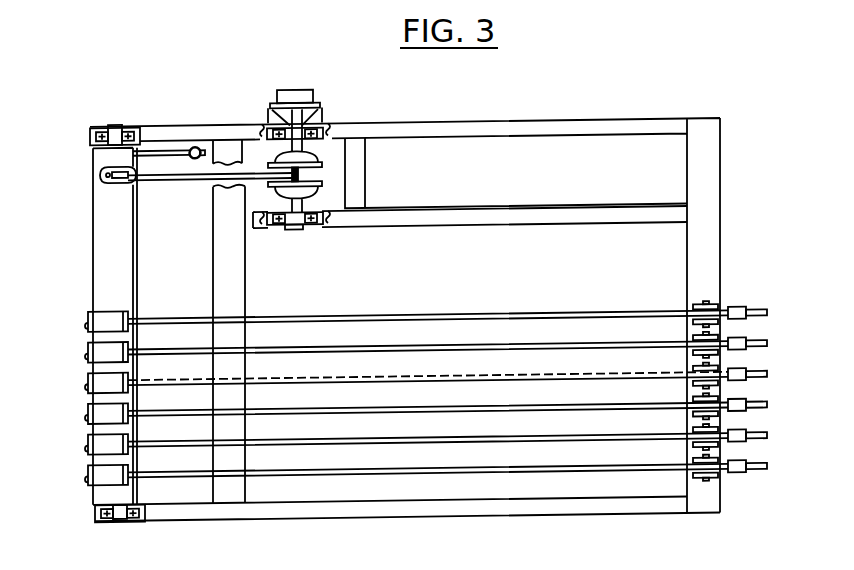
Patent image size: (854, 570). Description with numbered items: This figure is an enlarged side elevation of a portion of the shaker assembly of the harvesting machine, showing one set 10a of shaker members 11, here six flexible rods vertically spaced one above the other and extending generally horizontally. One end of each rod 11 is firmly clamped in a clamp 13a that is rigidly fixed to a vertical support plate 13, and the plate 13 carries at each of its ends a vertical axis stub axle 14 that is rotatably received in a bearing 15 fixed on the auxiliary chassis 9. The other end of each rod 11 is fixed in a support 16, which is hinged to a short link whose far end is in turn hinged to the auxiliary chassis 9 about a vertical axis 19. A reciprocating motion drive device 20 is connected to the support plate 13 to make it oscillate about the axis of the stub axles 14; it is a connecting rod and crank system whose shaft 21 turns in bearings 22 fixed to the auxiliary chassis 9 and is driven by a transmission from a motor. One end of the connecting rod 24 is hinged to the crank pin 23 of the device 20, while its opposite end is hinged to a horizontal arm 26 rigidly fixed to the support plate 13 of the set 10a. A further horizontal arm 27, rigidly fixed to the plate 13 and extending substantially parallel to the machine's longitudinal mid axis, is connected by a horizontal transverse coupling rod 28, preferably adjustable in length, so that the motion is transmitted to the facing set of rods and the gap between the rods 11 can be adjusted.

The auxiliary chassis 9 is at (538, 121).
The set of shaker members 10a is at (547, 309).
The shaker member 11 is at (413, 376).
The vertical support plate 13 is at (121, 273).
The clamp 13a is at (105, 378).
The stub axle 14 is at (125, 518).
The bearing 15 is at (122, 131).
The support 16 is at (740, 322).
The vertical axis 19 is at (706, 306).
The reciprocating motion drive device 20 is at (326, 171).
The shaft 21 is at (318, 105).
The bearing 22 is at (290, 126).
The crank pin 23 is at (300, 176).
The connecting rod 24 is at (186, 178).
The horizontal arm 26 is at (108, 171).
The horizontal arm 27 is at (167, 147).
The coupling rod 28 is at (191, 156).